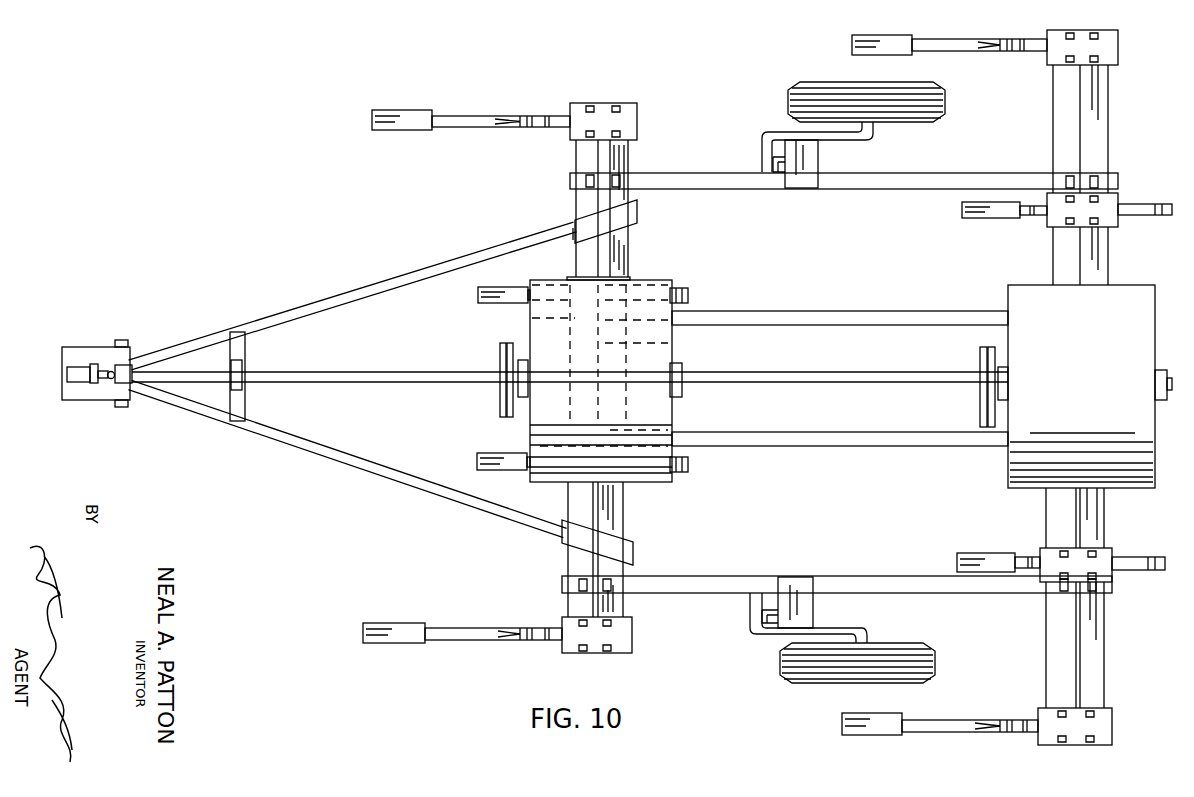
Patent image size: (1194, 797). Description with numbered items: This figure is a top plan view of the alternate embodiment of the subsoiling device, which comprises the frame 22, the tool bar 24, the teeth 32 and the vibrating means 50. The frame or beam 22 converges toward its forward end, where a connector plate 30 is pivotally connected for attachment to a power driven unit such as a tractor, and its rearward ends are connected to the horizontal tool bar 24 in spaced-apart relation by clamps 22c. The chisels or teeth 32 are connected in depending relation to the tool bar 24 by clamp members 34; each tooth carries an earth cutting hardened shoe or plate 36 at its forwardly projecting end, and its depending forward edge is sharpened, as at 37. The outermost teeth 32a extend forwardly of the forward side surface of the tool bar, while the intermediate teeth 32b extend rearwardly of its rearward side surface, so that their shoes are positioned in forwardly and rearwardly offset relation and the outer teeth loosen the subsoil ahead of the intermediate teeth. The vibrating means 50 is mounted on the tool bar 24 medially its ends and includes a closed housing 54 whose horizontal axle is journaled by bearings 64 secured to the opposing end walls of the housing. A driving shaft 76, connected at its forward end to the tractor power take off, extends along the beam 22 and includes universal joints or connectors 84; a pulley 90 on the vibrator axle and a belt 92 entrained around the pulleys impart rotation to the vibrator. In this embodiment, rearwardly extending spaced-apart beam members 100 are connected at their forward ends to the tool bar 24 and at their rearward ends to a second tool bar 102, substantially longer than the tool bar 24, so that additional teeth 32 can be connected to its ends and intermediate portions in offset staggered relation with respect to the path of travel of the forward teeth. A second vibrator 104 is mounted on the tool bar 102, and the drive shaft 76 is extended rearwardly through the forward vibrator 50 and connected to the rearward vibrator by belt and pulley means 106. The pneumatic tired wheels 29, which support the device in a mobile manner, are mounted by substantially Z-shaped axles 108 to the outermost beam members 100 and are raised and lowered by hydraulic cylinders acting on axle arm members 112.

The frame or beam 22 is at (363, 275).
The clamps 22c is at (637, 212).
The horizontal tool bar 24 is at (630, 160).
The pneumatic tired wheels 29 is at (810, 82).
The connector plate 30 is at (104, 348).
The chisels or teeth 32 is at (485, 108).
The outermost teeth 32a is at (512, 116).
The intermediate teeth 32b is at (688, 292).
The clamp members 34 is at (638, 120).
The earth cutting hardened shoe or plate 36 is at (386, 110).
The sharpened edge 37 is at (498, 127).
The vibrating means 50 is at (563, 269).
The closed housing 54 is at (660, 280).
The bearings 64 is at (522, 358).
The driving shaft 76 is at (356, 372).
The universal joints or connectors 84 is at (99, 384).
The pulley 90 is at (500, 358).
The belt 92 is at (503, 418).
The beam members 100 is at (726, 172).
The second tool bar 102 is at (1053, 133).
The second vibrator 104 is at (1007, 285).
The belt and pulley means 106 is at (974, 355).
The Z-shaped axles 108 is at (778, 132).
The axle arm members 112 is at (774, 142).